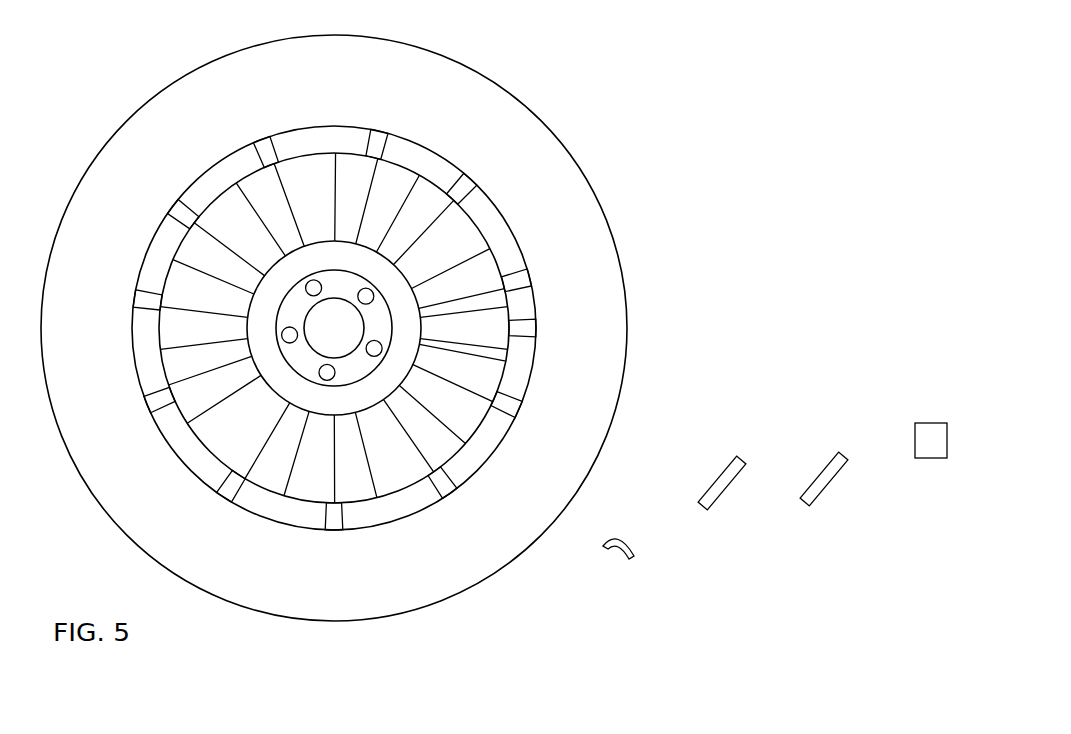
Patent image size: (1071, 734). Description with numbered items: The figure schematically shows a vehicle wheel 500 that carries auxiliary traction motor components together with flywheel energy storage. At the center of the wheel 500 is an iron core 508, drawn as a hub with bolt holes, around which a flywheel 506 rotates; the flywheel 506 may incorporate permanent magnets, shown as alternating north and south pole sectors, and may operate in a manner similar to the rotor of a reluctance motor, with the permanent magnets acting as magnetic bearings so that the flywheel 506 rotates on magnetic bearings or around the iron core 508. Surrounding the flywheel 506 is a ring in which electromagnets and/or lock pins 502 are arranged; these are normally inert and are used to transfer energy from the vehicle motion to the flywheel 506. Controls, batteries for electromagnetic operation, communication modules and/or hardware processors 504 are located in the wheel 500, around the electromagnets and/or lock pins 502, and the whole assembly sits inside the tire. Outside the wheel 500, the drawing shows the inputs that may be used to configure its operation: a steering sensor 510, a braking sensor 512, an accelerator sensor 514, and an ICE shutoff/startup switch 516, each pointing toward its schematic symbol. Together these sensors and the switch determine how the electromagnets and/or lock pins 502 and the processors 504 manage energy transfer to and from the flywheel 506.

The vehicle wheel 500 is at (138, 95).
The electromagnets and/or lock pins 502 is at (380, 125).
The controls, batteries, communication modules and/or hardware processors 504 is at (495, 232).
The flywheel 506 is at (482, 315).
The iron core 508 is at (407, 335).
The steering sensor 510 is at (614, 558).
The braking sensor 512 is at (743, 488).
The accelerator sensor 514 is at (848, 493).
The ICE shutoff/startup switch 516 is at (930, 471).